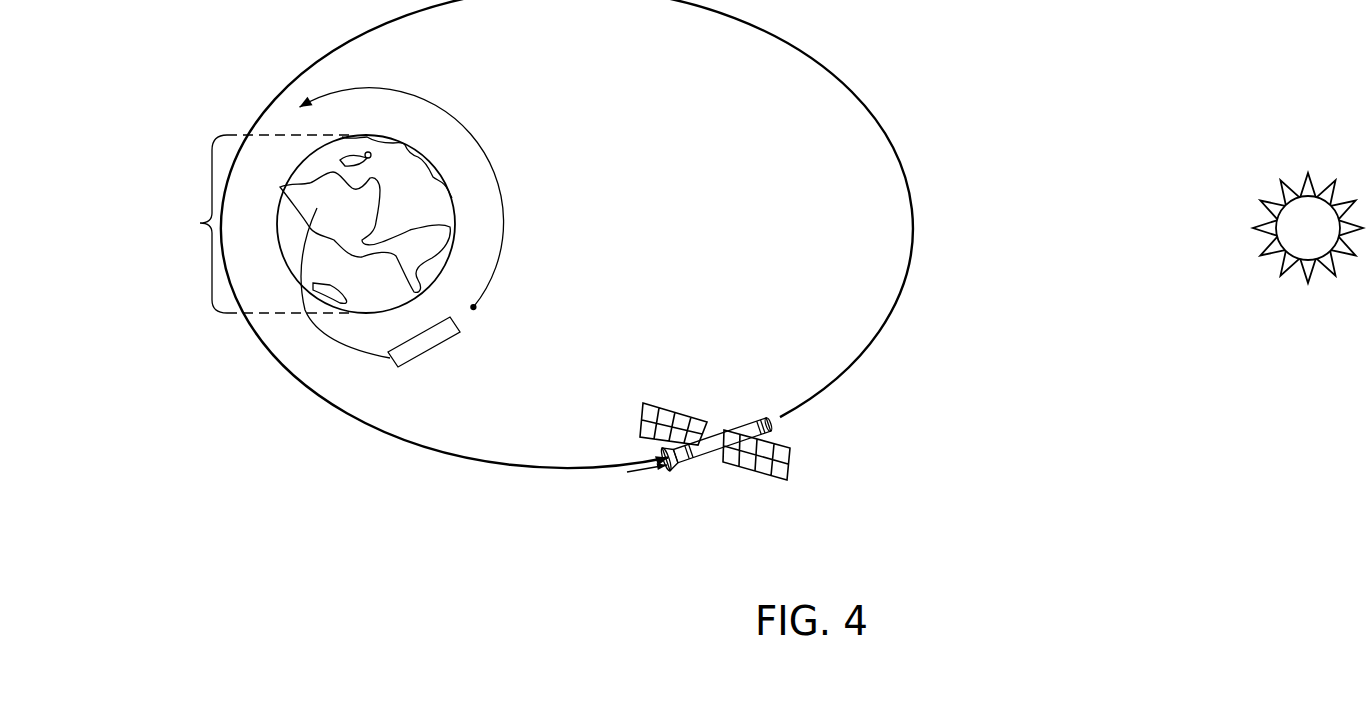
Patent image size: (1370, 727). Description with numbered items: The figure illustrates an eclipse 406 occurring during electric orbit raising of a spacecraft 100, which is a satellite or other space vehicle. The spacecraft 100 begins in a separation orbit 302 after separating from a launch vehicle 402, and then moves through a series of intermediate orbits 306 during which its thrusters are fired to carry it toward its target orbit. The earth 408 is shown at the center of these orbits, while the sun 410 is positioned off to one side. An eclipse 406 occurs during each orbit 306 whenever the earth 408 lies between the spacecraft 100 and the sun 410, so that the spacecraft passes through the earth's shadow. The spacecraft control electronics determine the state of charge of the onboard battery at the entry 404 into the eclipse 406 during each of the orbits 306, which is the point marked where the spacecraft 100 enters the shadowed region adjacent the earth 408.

The spacecraft 100 is at (793, 463).
The separation orbit 302 is at (490, 170).
The intermediate orbits 306 is at (848, 83).
The launch vehicle 402 is at (428, 352).
The entry 404 is at (245, 121).
The eclipse 406 is at (200, 223).
The earth 408 is at (424, 153).
The sun 410 is at (1308, 174).